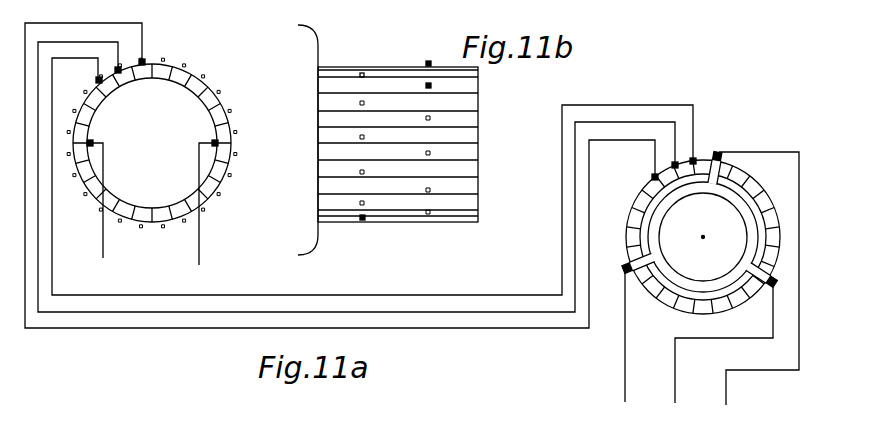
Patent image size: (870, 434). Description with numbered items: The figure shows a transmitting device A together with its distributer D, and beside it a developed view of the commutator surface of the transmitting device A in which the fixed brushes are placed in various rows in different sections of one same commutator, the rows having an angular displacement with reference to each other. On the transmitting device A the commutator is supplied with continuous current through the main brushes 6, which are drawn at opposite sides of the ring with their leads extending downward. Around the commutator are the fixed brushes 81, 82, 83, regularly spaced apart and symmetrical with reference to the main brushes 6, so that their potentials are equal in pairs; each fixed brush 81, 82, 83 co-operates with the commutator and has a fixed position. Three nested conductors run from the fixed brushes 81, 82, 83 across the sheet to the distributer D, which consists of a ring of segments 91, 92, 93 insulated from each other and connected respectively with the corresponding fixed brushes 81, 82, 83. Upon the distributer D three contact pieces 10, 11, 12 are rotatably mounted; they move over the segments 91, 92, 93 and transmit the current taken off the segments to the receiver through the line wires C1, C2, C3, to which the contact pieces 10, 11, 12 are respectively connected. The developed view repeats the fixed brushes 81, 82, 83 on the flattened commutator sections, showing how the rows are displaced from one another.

In FIG. 11A, the transmitting device A is at (152, 143).
In FIG. 11A, the main brushes 6 is at (152, 192).
In FIG. 11A, the fixed brush 81 is at (372, 176).
In FIG. 11B, the fixed brush 81 is at (440, 118).
In FIG. 11A, the fixed brush 82 is at (356, 177).
In FIG. 11B, the fixed brush 82 is at (363, 148).
In FIG. 11A, the fixed brush 83 is at (340, 175).
In FIG. 11B, the fixed brush 83 is at (438, 146).
In FIG. 11A, the distributer D is at (703, 237).
In FIG. 11A, the distributer segment 91 is at (687, 153).
In FIG. 11A, the distributer segment 92 is at (668, 161).
In FIG. 11A, the distributer segment 93 is at (648, 176).
In FIG. 11A, the contact piece 10 is at (726, 158).
In FIG. 11A, the contact piece 11 is at (773, 280).
In FIG. 11A, the contact piece 12 is at (631, 262).
In FIG. 11A, the line wire C1 is at (759, 281).
In FIG. 11A, the line wire C2 is at (724, 347).
In FIG. 11A, the line wire C3 is at (637, 341).